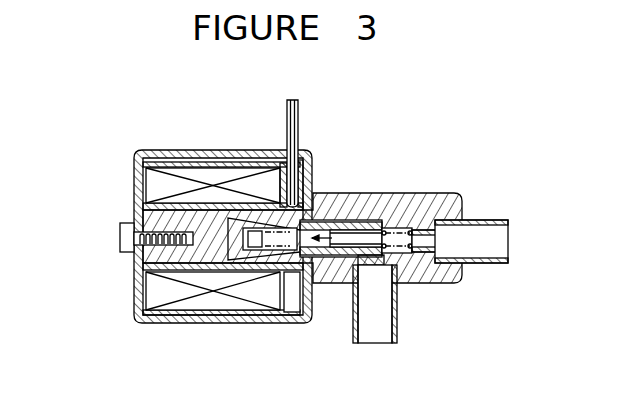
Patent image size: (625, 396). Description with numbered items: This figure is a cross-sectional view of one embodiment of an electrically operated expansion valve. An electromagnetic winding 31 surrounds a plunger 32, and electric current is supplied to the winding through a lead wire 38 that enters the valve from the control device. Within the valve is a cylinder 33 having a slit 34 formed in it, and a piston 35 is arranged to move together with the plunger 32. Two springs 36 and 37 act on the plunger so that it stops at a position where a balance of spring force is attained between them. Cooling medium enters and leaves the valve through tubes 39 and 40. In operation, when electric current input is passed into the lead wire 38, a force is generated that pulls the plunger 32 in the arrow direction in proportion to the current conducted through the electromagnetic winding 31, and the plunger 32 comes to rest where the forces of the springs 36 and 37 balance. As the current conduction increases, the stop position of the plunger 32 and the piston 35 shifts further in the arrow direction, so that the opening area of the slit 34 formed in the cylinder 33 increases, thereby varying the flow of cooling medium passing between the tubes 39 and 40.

The electromagnetic winding 31 is at (168, 185).
The plunger 32 is at (335, 207).
The cylinder 33 is at (370, 208).
The slit 34 is at (363, 264).
The piston 35 is at (405, 208).
The spring 36 is at (245, 252).
The spring 37 is at (415, 255).
The lead wire 38 is at (290, 125).
The tube for cooling medium 39 is at (487, 220).
The tube for cooling medium 40 is at (368, 333).